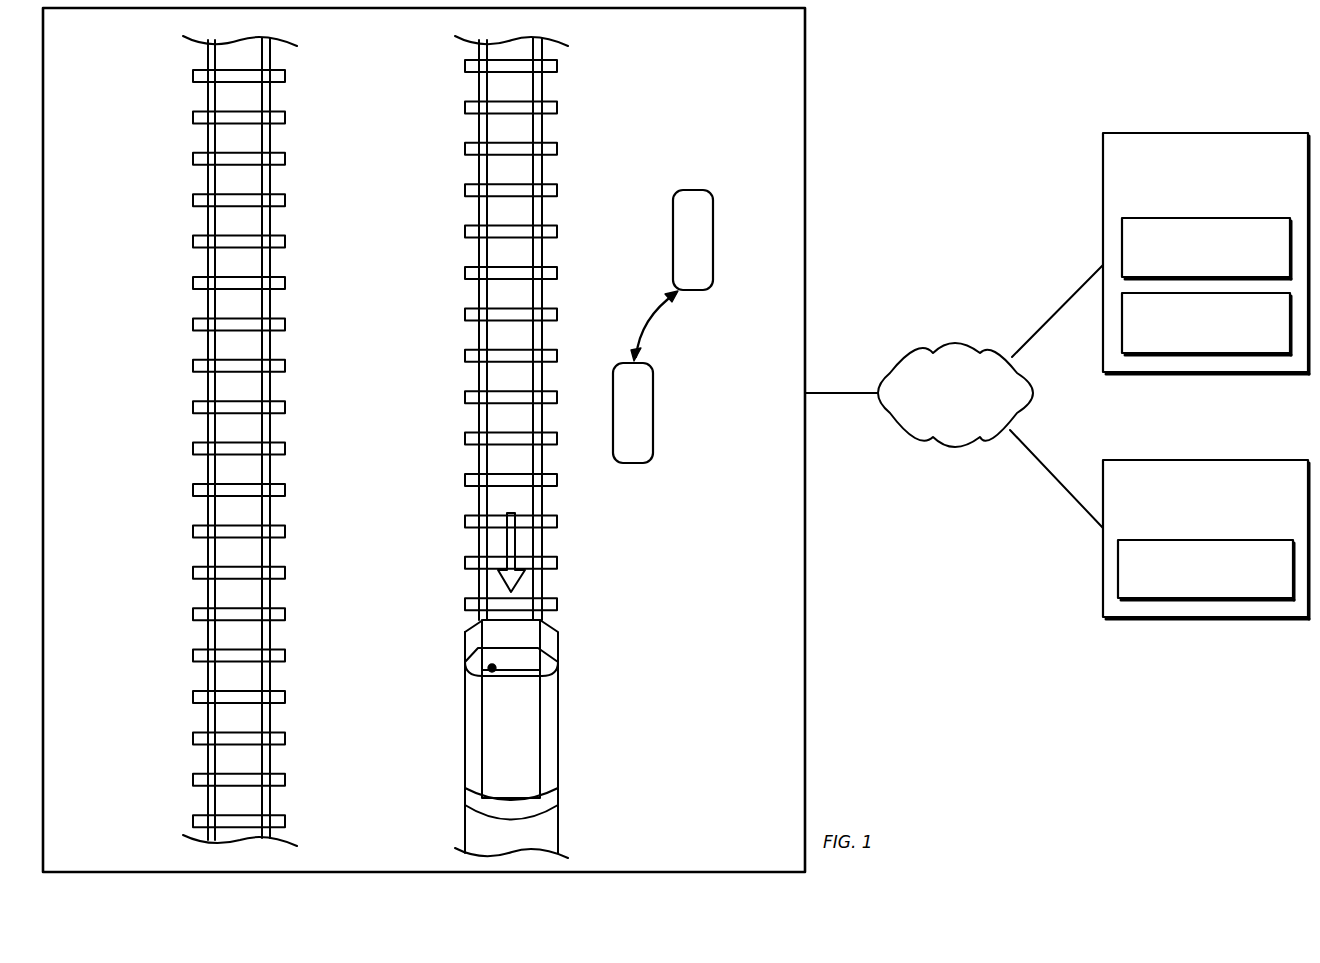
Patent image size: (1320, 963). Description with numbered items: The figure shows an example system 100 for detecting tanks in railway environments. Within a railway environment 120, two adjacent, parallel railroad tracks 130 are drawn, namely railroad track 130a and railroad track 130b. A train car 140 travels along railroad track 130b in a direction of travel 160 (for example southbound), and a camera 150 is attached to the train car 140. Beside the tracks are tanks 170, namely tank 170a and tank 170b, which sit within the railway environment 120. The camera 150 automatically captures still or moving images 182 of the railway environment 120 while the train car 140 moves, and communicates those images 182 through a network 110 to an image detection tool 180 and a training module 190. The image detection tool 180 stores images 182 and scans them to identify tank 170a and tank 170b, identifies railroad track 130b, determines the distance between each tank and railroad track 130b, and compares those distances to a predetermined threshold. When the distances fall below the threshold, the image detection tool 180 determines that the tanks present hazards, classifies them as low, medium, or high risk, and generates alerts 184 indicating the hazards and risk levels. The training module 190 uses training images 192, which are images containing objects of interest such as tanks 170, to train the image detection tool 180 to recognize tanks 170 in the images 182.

The system 100 is at (1034, 44).
The network 110 is at (955, 395).
The railway environment 120 is at (588, 77).
The railroad tracks 130 is at (318, 447).
The railroad track 130a is at (213, 343).
The railroad track 130b is at (483, 213).
The train car 140 is at (552, 717).
The camera 150 is at (489, 666).
The direction of travel 160 is at (520, 538).
The tanks 170 is at (685, 326).
The tank 170a is at (653, 387).
The tank 170b is at (673, 222).
The image detection tool 180 is at (1206, 253).
The images 182 is at (1206, 248).
The alerts 184 is at (1206, 324).
The training module 190 is at (1206, 539).
The training images 192 is at (1206, 570).